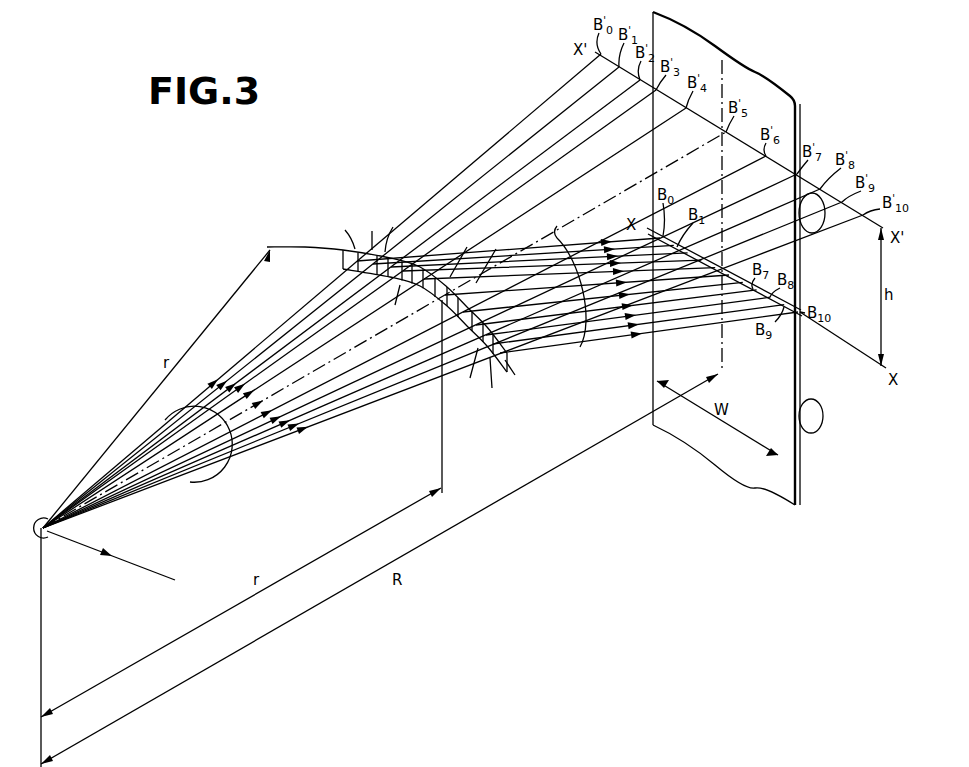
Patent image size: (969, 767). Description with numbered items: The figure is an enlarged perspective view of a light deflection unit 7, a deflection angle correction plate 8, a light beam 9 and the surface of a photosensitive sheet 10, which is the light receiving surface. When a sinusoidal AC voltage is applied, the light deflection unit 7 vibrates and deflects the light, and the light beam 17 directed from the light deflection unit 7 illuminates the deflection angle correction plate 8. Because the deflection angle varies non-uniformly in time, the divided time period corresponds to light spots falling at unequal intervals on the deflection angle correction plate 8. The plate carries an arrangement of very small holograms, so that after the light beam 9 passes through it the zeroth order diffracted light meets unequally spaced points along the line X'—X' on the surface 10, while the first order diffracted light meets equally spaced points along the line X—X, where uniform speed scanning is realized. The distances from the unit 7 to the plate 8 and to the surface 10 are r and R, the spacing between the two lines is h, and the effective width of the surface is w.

The light deflection unit 7 is at (39, 519).
The deflection angle correction plate 8 is at (341, 250).
The light beam 9 is at (580, 347).
The surface of photosensitive sheet 10 is at (805, 112).
The light beam 17 is at (222, 474).